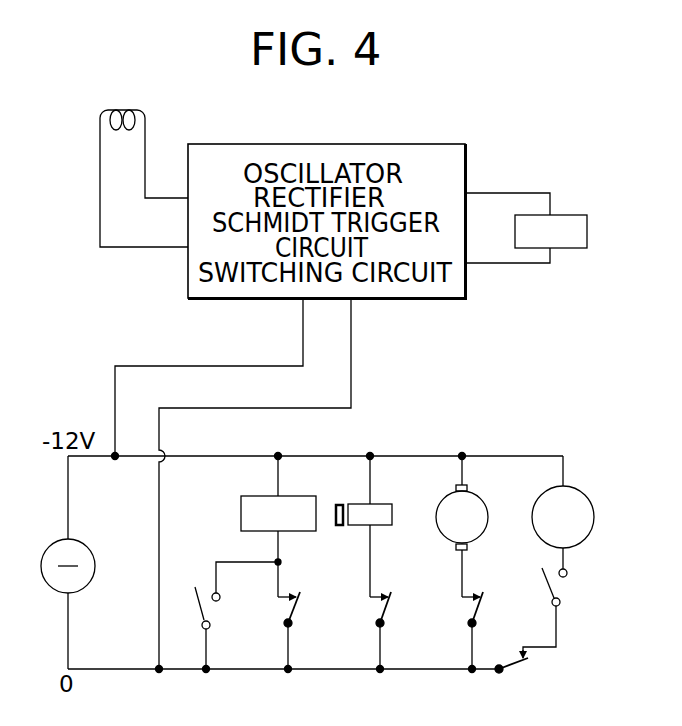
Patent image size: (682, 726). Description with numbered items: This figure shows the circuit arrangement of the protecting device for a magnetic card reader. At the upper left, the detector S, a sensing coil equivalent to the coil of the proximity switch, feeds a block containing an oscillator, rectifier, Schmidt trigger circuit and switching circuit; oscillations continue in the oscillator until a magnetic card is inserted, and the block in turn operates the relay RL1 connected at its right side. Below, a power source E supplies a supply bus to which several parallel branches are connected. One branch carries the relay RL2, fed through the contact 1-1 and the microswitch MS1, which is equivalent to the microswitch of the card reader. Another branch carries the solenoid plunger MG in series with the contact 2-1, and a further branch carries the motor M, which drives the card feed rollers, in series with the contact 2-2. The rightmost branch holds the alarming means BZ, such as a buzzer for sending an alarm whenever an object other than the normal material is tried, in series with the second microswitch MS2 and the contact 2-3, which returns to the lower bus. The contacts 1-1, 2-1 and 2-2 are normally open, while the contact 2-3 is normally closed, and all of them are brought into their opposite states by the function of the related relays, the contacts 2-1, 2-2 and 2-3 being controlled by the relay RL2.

The detector S is at (122, 105).
The relay RL1 is at (541, 223).
The relay RL2 is at (284, 509).
The solenoid plunger MG is at (374, 525).
The motor M is at (462, 525).
The alarming means BZ is at (563, 512).
The power source E is at (57, 562).
The microswitch MS1 is at (236, 617).
The second microswitch MS2 is at (570, 612).
The contact 1-1 is at (308, 617).
The contact 2-1 is at (400, 632).
The contact 2-2 is at (492, 632).
The contact 2-3 is at (532, 673).